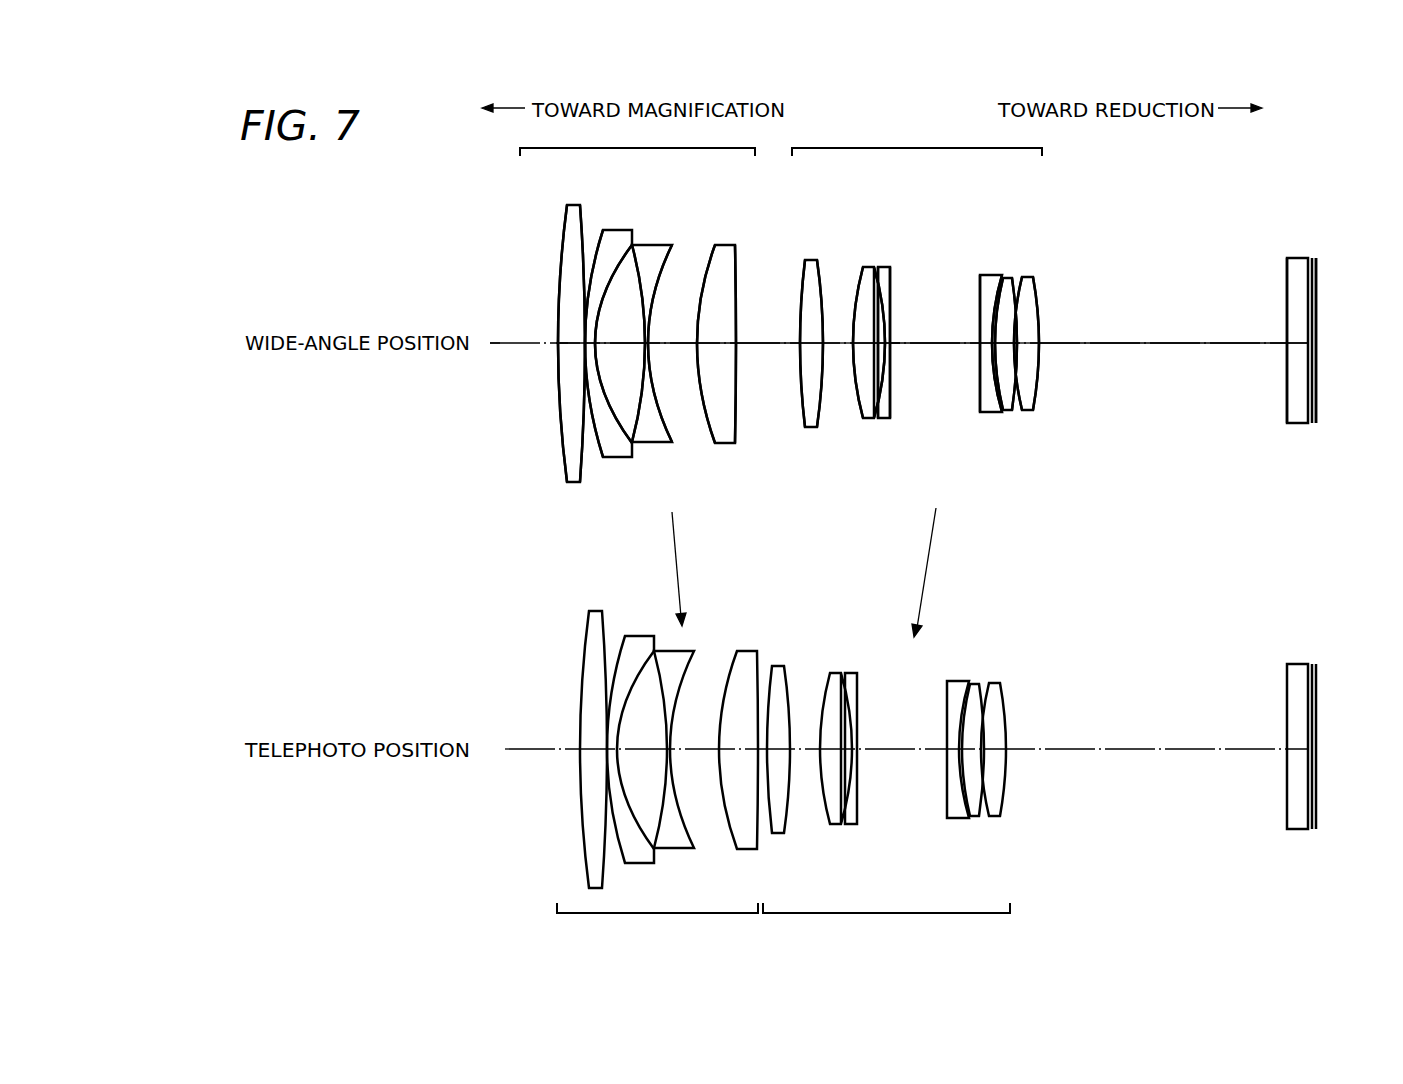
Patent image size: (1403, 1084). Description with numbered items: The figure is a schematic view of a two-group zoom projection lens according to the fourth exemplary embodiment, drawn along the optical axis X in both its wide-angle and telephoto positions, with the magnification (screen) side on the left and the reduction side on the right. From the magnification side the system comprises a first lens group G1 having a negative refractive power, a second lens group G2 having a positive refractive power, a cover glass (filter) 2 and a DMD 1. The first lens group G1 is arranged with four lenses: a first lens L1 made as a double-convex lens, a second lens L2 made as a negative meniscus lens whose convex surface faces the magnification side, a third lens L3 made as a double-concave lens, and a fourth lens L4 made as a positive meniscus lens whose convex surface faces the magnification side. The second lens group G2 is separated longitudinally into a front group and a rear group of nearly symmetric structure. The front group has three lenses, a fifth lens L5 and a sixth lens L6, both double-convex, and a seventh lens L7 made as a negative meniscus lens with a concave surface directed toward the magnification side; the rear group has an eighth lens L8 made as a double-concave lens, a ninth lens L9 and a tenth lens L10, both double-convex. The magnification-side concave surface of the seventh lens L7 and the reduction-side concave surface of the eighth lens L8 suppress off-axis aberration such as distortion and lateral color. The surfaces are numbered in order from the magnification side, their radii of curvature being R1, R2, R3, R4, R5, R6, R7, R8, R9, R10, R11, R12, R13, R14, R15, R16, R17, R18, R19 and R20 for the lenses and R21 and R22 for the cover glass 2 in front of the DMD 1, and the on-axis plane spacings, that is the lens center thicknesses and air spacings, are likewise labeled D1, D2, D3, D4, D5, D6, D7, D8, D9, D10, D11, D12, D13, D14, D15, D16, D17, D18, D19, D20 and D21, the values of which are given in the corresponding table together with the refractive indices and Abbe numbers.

The first lens group G1 is at (639, 535).
The second lens group G2 is at (902, 535).
The first lens L1 is at (561, 347).
The second lens L2 is at (617, 350).
The third lens L3 is at (664, 345).
The fourth lens L4 is at (725, 360).
The fifth lens L5 is at (806, 348).
The sixth lens L6 is at (865, 356).
The seventh lens L7 is at (879, 366).
The eighth lens L8 is at (979, 341).
The ninth lens L9 is at (1014, 355).
The tenth lens L10 is at (1049, 354).
The lens surface radius of curvature R1 is at (563, 252).
The lens surface radius of curvature R2 is at (582, 238).
The lens surface radius of curvature R3 is at (598, 248).
The lens surface radius of curvature R4 is at (619, 268).
The lens surface radius of curvature R5 is at (637, 300).
The lens surface radius of curvature R6 is at (666, 272).
The lens surface radius of curvature R7 is at (712, 265).
The lens surface radius of curvature R8 is at (737, 280).
The lens surface radius of curvature R9 is at (804, 283).
The lens surface radius of curvature R10 is at (823, 296).
The lens surface radius of curvature R11 is at (855, 300).
The lens surface radius of curvature R12 is at (880, 312).
The lens surface radius of curvature R13 is at (876, 365).
The lens surface radius of curvature R14 is at (891, 312).
The lens surface radius of curvature R15 is at (979, 290).
The lens surface radius of curvature R16 is at (1000, 290).
The lens surface radius of curvature R17 is at (999, 405).
The lens surface radius of curvature R18 is at (1016, 305).
The lens surface radius of curvature R19 is at (1020, 405).
The lens surface radius of curvature R20 is at (1038, 300).
The lens surface radius of curvature R21 is at (1287, 265).
The lens surface radius of curvature R22 is at (1316, 275).
The on-axis plane spacing D1 is at (567, 350).
The on-axis plane spacing D2 is at (566, 340).
The on-axis plane spacing D3 is at (592, 344).
The on-axis plane spacing D4 is at (606, 352).
The on-axis plane spacing D5 is at (652, 345).
The on-axis plane spacing D6 is at (676, 352).
The on-axis plane spacing D7 is at (723, 352).
The on-axis plane spacing D8 is at (752, 352).
The on-axis plane spacing D9 is at (800, 343).
The on-axis plane spacing D10 is at (828, 352).
The on-axis plane spacing D11 is at (842, 344).
The on-axis plane spacing D12 is at (891, 352).
The on-axis plane spacing D13 is at (896, 344).
The on-axis plane spacing D14 is at (937, 352).
The on-axis plane spacing D15 is at (986, 342).
The on-axis plane spacing D16 is at (992, 350).
The on-axis plane spacing D17 is at (1030, 330).
The on-axis plane spacing D18 is at (1030, 352).
The on-axis plane spacing D19 is at (1024, 338).
The on-axis plane spacing D20 is at (1158, 350).
The on-axis plane spacing D21 is at (1296, 340).
The optical axis X is at (496, 352).
The DMD 1 is at (1336, 332).
The cover glass 2 is at (1276, 364).